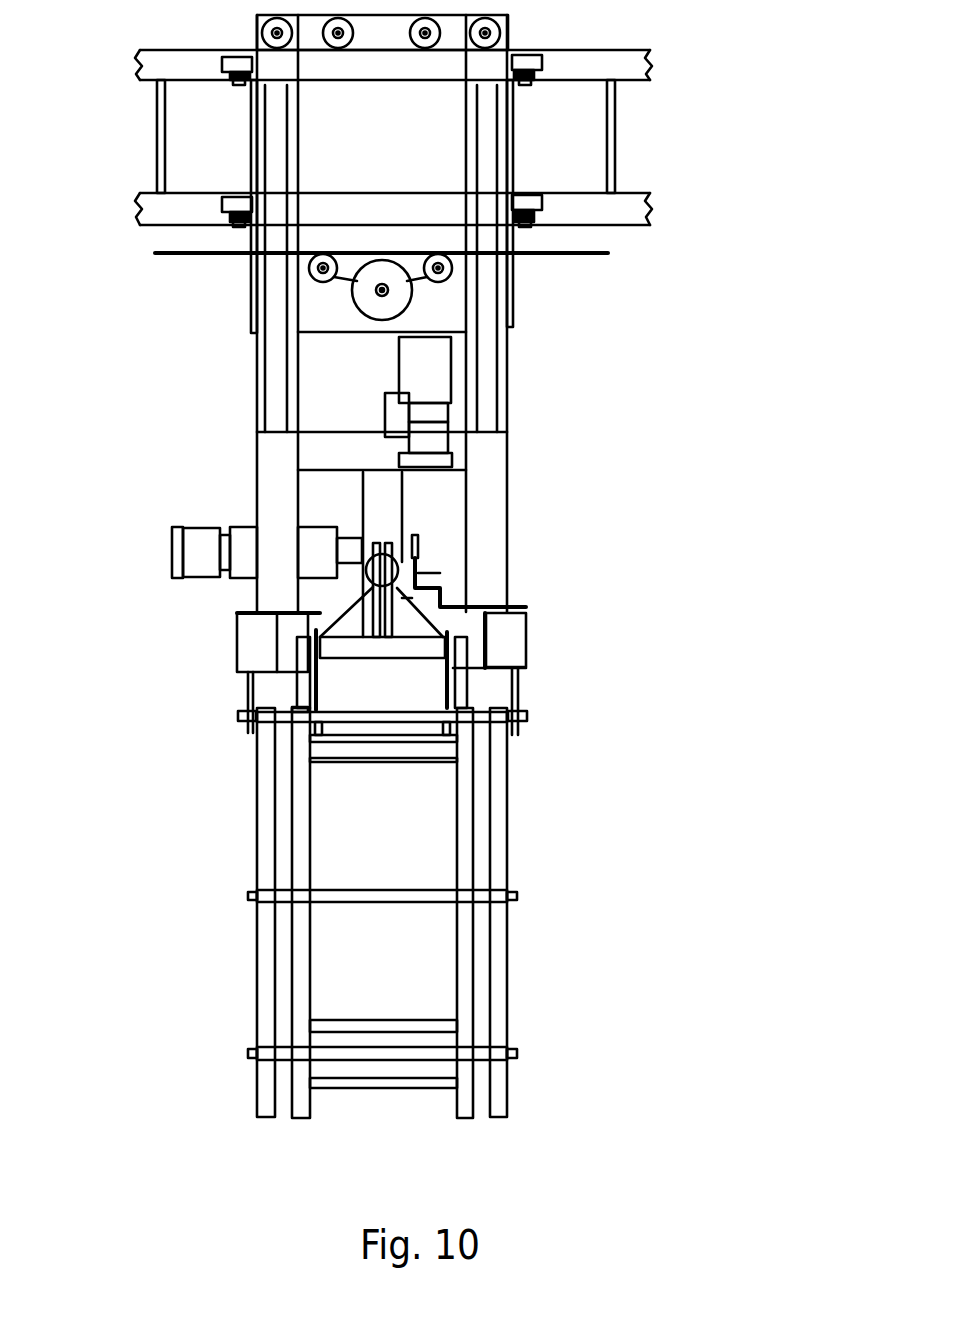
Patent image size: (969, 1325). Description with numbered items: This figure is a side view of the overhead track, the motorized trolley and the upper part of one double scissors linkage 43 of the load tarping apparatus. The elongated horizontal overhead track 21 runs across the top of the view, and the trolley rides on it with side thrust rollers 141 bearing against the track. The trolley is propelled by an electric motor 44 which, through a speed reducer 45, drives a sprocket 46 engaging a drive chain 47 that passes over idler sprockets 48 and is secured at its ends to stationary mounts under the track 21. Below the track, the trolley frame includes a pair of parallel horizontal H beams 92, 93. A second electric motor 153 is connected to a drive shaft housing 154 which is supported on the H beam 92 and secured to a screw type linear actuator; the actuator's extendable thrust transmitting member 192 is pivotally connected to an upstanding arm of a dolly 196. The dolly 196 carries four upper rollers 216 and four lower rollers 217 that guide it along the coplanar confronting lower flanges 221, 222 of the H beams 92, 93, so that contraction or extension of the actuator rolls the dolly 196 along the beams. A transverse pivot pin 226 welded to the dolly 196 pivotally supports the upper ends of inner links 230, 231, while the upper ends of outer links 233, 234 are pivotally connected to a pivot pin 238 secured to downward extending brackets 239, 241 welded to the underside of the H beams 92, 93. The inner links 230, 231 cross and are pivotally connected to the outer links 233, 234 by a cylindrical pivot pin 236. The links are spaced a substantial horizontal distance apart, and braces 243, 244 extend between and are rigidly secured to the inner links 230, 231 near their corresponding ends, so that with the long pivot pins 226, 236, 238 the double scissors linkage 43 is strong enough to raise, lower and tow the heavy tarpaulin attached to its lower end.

The overhead track 21 is at (227, 78).
The side thrust rollers 141 is at (223, 193).
The drive chain 47 is at (200, 258).
The idler sprockets 48 is at (317, 273).
The sprocket 46 is at (363, 300).
The speed reducer 45 is at (370, 337).
The electric motor 44 is at (428, 383).
The electric motor 153 is at (195, 540).
The drive shaft housing 154 is at (247, 538).
The thrust transmitting member 192 is at (363, 570).
The dolly 196 is at (497, 577).
The upper rollers 216 is at (272, 653).
The H beam 92 is at (275, 647).
The H beam 93 is at (497, 640).
The lower flange 221 is at (292, 682).
The lower rollers 217 is at (295, 688).
The lower flange 222 is at (463, 688).
The pivot pin 238 is at (247, 706).
The bracket 239 is at (245, 720).
The bracket 241 is at (517, 733).
The double scissors linkage 43 is at (369, 939).
The pivot pin 226 is at (357, 713).
The brace 243 is at (407, 750).
The inner link 230 is at (300, 833).
The inner link 231 is at (465, 795).
The outer link 233 is at (265, 915).
The outer link 234 is at (497, 965).
The pivot pin 236 is at (403, 903).
The brace 244 is at (373, 1022).